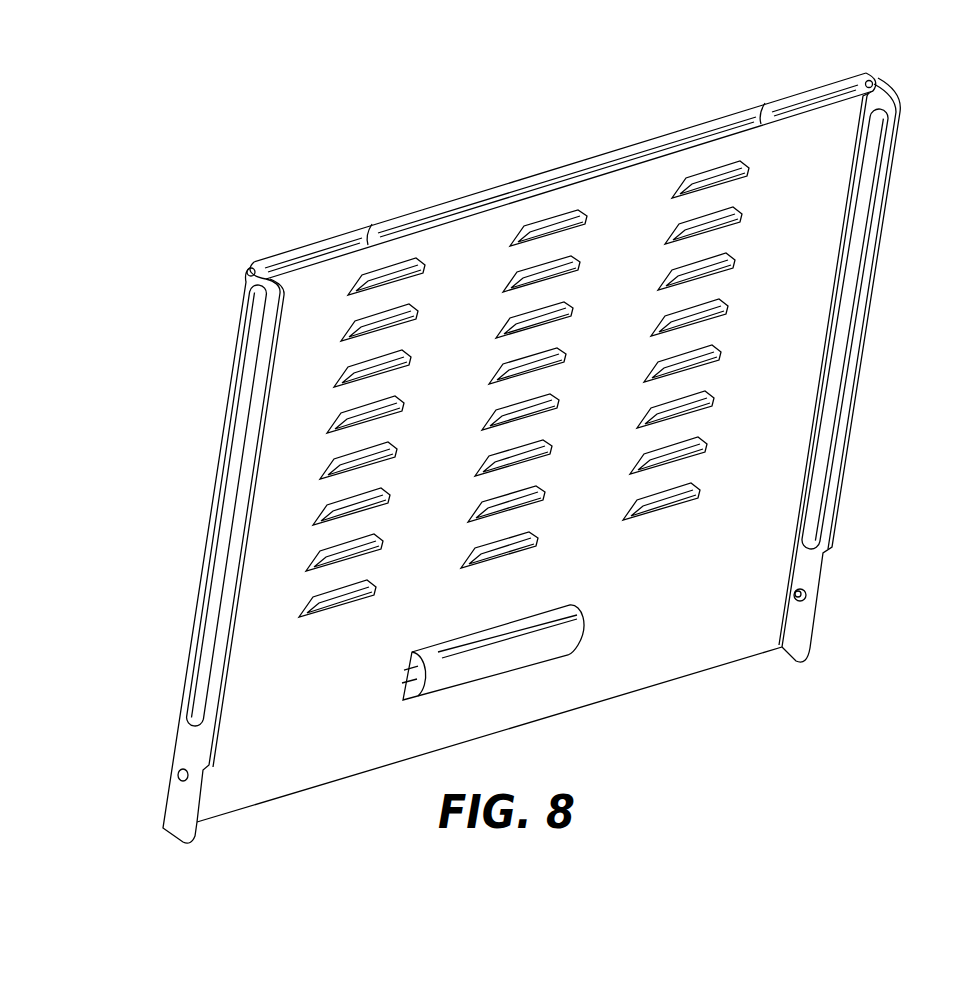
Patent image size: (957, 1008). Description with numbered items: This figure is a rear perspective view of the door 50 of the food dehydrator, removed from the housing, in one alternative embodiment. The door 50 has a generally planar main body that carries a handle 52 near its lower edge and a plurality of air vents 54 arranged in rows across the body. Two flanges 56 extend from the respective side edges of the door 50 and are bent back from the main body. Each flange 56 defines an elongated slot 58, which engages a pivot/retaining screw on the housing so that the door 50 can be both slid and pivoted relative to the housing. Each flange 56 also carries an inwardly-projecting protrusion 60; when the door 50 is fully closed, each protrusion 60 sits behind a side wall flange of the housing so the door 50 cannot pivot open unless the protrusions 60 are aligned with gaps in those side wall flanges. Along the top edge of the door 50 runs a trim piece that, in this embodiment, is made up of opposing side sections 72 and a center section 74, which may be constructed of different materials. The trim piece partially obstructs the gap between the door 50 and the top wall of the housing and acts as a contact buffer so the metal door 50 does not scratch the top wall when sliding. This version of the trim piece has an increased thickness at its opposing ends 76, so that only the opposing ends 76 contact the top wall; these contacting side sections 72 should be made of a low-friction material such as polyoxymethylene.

The door 50 is at (275, 782).
The handle 52 is at (500, 662).
The air vents 54 is at (668, 500).
The flanges 56 is at (172, 833).
The elongated slots 58 is at (196, 690).
The protrusion 60 is at (180, 777).
The side sections 72 is at (318, 242).
The center section 74 is at (565, 166).
The opposing ends 76 is at (248, 268).